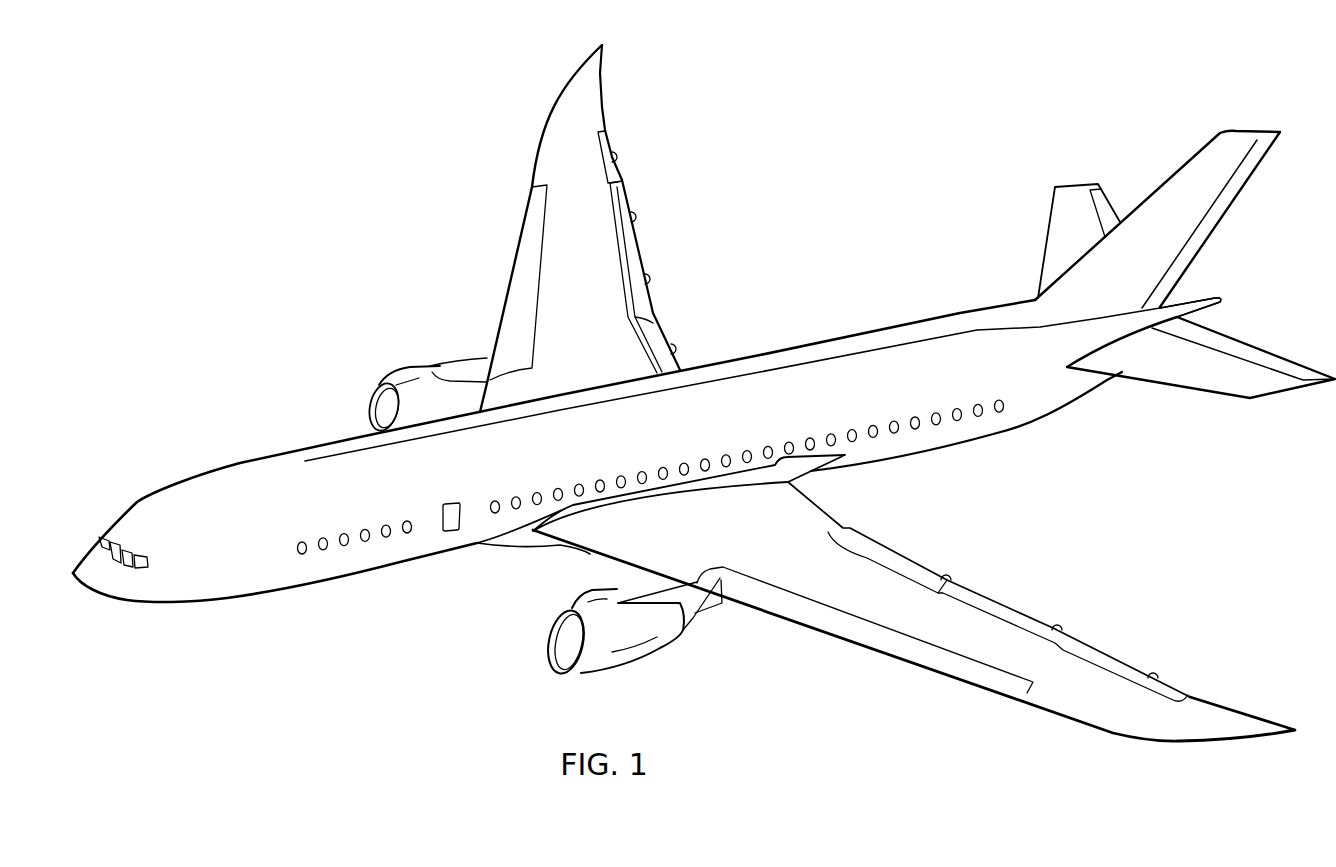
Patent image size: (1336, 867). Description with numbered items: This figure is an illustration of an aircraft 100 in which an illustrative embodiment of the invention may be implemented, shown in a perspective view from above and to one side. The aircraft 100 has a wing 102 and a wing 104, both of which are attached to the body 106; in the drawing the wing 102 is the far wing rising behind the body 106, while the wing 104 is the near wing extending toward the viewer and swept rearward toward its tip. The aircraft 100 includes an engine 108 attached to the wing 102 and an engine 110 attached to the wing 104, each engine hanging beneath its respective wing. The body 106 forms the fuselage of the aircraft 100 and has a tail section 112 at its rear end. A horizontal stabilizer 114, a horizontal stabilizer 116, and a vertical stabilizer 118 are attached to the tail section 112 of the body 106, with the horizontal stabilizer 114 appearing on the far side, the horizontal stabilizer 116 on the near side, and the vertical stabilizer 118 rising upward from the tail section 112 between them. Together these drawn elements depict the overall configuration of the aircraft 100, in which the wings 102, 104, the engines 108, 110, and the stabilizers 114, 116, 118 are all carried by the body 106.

The aircraft 100 is at (331, 188).
The wing 102 is at (603, 80).
The wing 104 is at (1148, 738).
The body 106 is at (242, 463).
The engine 108 is at (410, 371).
The engine 110 is at (637, 664).
The tail section 112 is at (1108, 428).
The horizontal stabilizer 114 is at (1045, 242).
The horizontal stabilizer 116 is at (1203, 387).
The vertical stabilizer 118 is at (1227, 215).